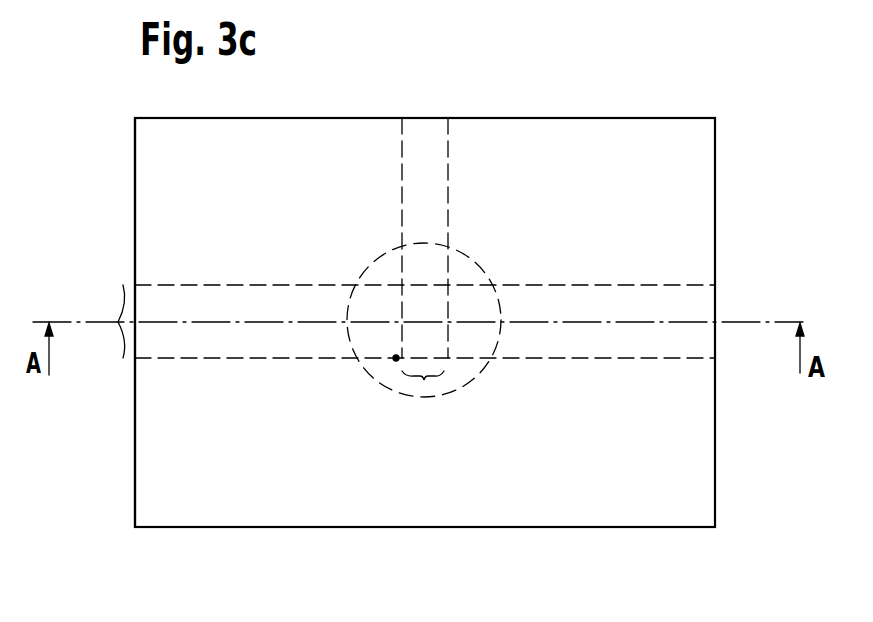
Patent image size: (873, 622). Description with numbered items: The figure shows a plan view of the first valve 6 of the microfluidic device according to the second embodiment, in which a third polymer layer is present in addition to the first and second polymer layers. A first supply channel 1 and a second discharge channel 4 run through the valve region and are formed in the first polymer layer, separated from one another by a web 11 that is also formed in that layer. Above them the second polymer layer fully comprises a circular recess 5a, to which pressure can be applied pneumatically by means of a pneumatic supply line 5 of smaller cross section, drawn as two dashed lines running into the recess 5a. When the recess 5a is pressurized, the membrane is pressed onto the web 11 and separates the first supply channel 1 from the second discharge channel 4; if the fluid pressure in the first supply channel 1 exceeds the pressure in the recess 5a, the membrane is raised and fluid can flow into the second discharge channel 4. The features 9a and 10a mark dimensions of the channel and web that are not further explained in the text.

The first supply channel 1 is at (148, 345).
The second discharge channel 4 is at (700, 345).
The pneumatic supply line 5 is at (427, 137).
The recess 5a is at (458, 270).
The first valve 6 is at (752, 102).
The contact region 9a is at (123, 290).
The contact area 10a is at (424, 380).
The web 11 is at (396, 358).